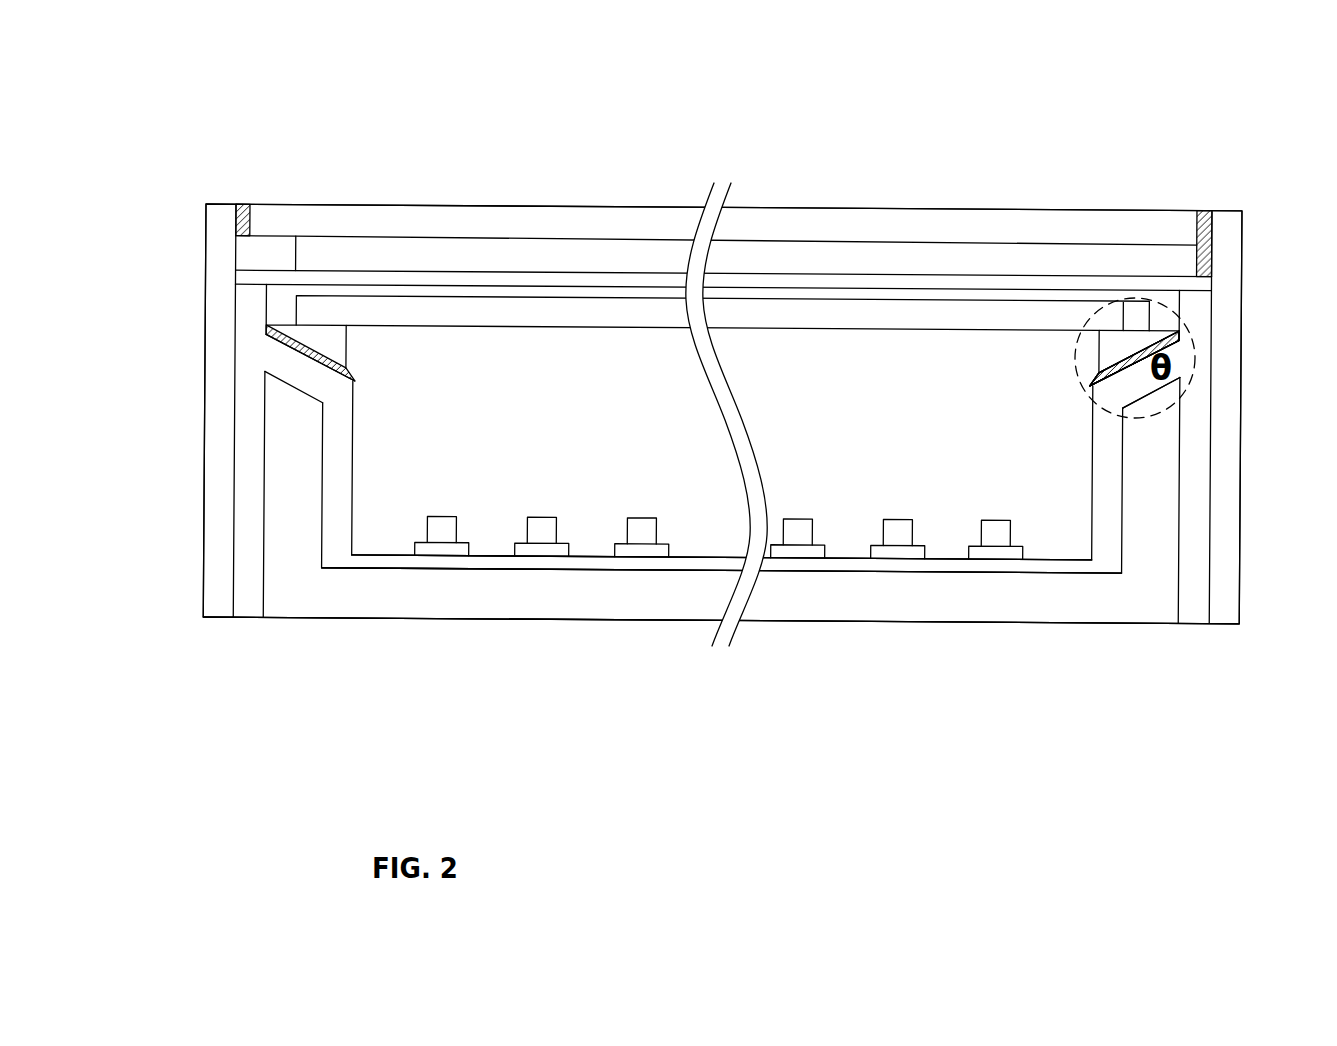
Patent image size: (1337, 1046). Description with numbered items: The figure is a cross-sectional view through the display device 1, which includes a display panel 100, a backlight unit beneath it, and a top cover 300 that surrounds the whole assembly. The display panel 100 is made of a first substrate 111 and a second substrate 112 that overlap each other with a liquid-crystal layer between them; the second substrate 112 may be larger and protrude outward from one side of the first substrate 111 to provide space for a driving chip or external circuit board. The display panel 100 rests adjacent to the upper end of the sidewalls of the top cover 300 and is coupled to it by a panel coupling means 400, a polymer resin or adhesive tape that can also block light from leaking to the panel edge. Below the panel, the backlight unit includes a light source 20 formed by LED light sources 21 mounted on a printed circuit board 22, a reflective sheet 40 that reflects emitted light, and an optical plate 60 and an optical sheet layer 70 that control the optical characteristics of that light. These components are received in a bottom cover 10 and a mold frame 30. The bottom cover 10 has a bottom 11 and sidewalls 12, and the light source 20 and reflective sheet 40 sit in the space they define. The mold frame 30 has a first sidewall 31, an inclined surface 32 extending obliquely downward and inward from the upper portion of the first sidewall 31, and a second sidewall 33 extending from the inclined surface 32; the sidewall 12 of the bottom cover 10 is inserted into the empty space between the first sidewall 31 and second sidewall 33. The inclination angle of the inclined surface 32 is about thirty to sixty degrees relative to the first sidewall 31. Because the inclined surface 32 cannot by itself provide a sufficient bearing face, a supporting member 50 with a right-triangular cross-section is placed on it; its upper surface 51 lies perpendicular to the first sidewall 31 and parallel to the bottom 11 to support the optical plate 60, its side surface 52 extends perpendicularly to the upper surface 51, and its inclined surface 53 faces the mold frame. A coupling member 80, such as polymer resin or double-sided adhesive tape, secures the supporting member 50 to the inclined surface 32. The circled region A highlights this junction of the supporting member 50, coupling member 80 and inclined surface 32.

The display device 1 is at (342, 103).
The top cover 300 is at (224, 205).
The panel coupling means 400 is at (246, 205).
The display panel 100 is at (724, 178).
The first substrate 111 is at (874, 252).
The second substrate 112 is at (786, 236).
The optical sheet layer 70 is at (575, 282).
The optical plate 60 is at (466, 318).
The mold frame 30 is at (780, 607).
The first sidewall 31 is at (1186, 525).
The inclined surface 32 is at (1142, 388).
The second sidewall 33 is at (1098, 479).
The supporting member 50 is at (722, 255).
The upper surface 51 is at (1137, 297).
The side surface 52 is at (1100, 347).
The inclined surface 53 is at (1147, 303).
The coupling member 80 is at (1092, 381).
The enlarged region A is at (1197, 344).
The bottom cover 10 is at (721, 645).
The bottom 11 is at (998, 603).
The sidewalls 12 is at (1137, 542).
The reflective sheet 40 is at (653, 565).
The light source 20 is at (719, 630).
The LED light source 21 is at (552, 528).
The printed circuit board 22 is at (530, 550).